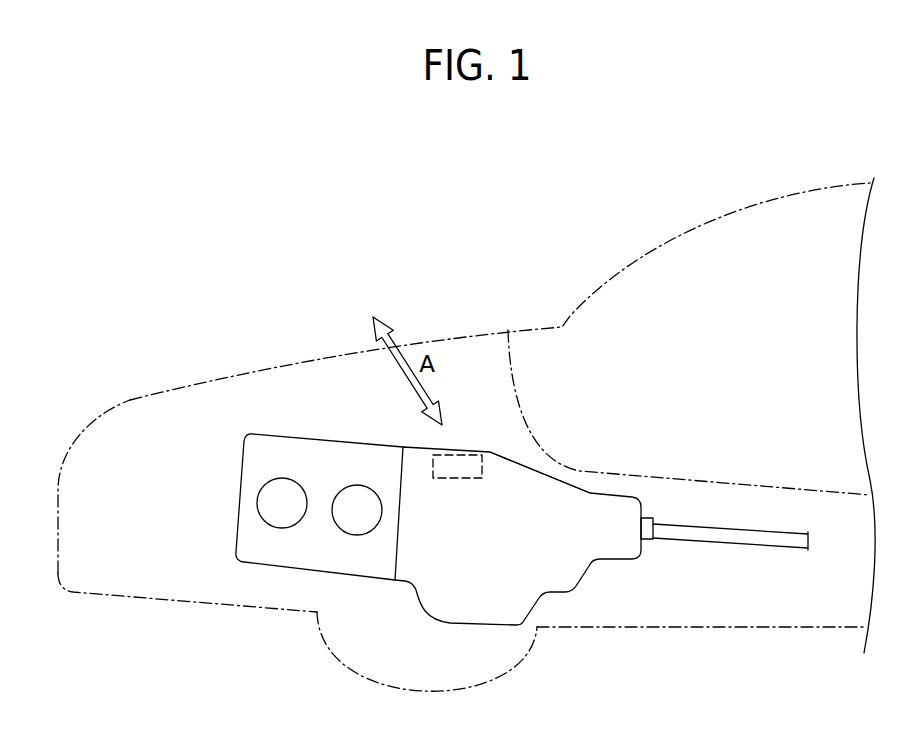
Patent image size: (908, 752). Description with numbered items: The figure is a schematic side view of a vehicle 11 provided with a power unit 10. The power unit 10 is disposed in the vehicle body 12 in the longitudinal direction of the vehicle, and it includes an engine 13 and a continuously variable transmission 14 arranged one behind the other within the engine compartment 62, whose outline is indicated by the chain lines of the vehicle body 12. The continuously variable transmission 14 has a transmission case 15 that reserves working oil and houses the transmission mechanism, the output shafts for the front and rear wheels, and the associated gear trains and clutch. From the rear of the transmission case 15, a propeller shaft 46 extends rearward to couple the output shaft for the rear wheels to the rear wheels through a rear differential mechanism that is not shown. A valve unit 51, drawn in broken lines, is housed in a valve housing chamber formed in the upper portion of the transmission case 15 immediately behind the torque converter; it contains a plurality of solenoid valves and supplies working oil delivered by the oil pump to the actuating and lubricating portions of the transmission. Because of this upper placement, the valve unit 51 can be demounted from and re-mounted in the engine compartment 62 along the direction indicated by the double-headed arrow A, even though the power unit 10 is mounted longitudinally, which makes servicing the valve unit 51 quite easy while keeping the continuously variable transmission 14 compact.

The power unit 10 is at (237, 435).
The vehicle 11 is at (325, 238).
The vehicle body 12 is at (108, 418).
The engine 13 is at (263, 462).
The continuously variable transmission 14 is at (556, 485).
The transmission case 15 is at (487, 570).
The propeller shaft 46 is at (737, 537).
The valve unit 51 is at (473, 457).
The engine compartment 62 is at (298, 392).